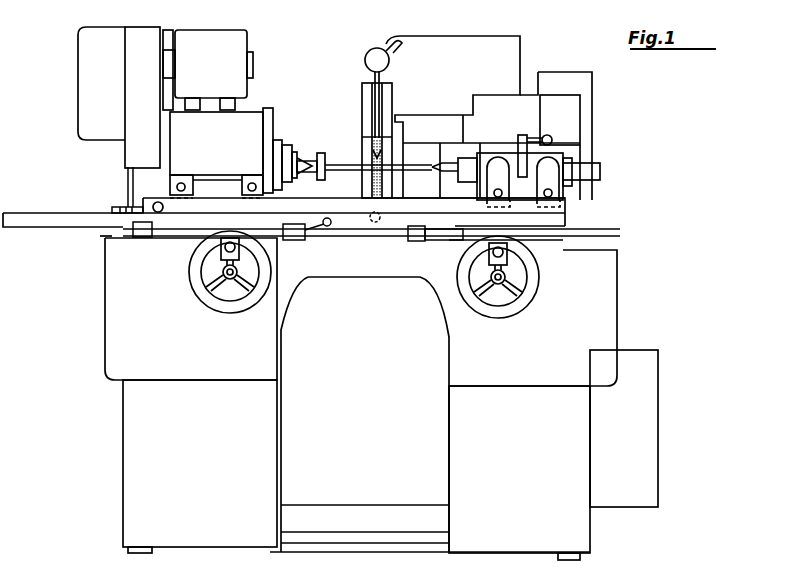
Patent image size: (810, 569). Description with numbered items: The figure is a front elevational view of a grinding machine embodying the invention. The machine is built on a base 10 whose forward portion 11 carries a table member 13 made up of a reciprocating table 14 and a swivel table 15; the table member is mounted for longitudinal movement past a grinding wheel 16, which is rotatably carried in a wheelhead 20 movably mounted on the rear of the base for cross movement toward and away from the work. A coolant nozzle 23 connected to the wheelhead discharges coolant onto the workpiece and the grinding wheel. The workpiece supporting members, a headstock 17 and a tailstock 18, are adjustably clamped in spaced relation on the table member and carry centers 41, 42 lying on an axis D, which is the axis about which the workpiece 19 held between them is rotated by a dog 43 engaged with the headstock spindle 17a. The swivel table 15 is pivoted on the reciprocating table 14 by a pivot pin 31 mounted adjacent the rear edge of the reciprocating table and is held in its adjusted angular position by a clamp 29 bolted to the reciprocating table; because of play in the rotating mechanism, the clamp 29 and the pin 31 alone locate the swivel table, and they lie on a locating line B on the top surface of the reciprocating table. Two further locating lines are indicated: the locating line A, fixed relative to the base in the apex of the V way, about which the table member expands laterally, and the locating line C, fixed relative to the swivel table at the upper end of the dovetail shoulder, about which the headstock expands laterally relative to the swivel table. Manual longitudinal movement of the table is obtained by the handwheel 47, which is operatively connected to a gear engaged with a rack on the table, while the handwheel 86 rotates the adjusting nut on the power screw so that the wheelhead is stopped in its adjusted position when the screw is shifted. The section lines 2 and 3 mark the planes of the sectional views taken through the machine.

The section line 2- 2 is at (447, 35).
The section line 3- 3 is at (120, 103).
The base 10 is at (590, 515).
The forward portion 11 is at (560, 333).
The table member 13 is at (106, 208).
The reciprocating table 14 is at (62, 228).
The swivel table 15 is at (551, 218).
The grinding wheel 16 is at (372, 135).
The headstock 17 is at (222, 160).
The headstock spindle 17a is at (282, 150).
The tailstock 18 is at (563, 156).
The workpiece 19 is at (378, 180).
The wheelhead 20 is at (507, 137).
The nozzle 23 is at (385, 138).
The clamp 29 is at (124, 206).
The pivot pin 31 is at (383, 214).
The headstock center 41 is at (303, 173).
The tailstock center 42 is at (455, 185).
The dog 43 is at (322, 152).
The handwheel 47 is at (233, 311).
The handwheel 86 is at (540, 283).
The locating line A is at (640, 257).
The locating line B is at (567, 228).
The locating line C is at (567, 206).
The axis D is at (448, 172).